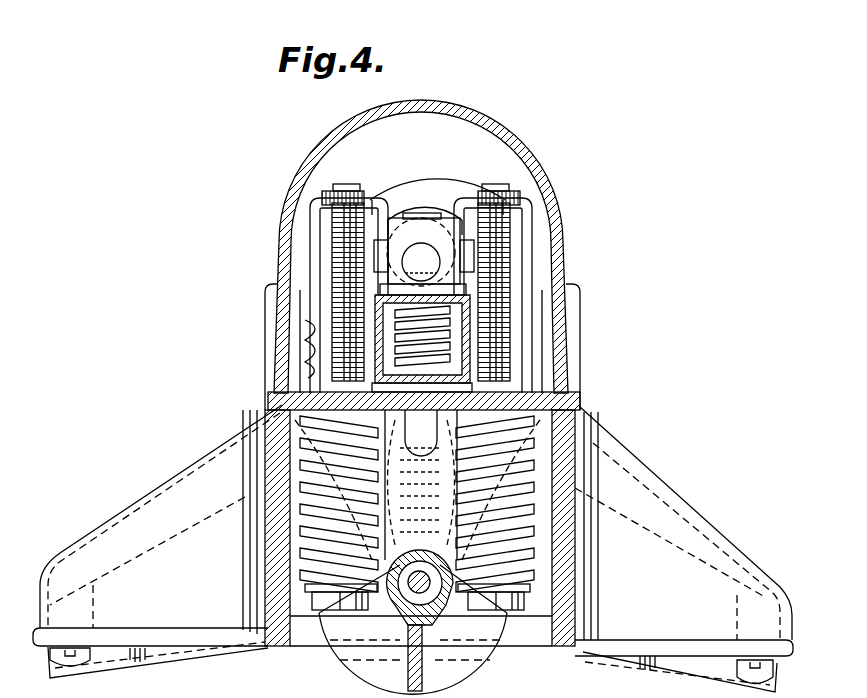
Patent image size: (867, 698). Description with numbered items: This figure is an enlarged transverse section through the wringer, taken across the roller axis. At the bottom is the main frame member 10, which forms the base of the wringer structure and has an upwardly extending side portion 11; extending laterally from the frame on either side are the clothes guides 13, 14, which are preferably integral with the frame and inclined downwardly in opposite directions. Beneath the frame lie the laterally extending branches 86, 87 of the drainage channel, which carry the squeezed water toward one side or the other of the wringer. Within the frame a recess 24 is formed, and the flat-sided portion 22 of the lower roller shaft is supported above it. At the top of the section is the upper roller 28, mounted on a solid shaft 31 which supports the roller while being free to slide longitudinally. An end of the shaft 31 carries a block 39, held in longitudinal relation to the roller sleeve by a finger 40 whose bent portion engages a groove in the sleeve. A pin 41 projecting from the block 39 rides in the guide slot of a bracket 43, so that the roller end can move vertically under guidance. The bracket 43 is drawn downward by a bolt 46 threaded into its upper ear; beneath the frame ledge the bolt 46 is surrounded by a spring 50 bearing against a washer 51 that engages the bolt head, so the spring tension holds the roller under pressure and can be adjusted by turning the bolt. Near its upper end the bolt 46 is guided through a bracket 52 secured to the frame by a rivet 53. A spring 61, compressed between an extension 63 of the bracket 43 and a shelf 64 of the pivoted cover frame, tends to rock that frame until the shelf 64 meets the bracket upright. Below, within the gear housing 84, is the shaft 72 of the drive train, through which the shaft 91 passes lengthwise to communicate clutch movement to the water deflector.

The main frame member 10 is at (128, 640).
The side portion 11 is at (300, 611).
The clothes guide 13 is at (659, 531).
The clothes guide 14 is at (189, 519).
The flat-sided portion 22 is at (580, 412).
The recess 24 is at (300, 450).
The upper roller 28 is at (430, 180).
The shaft 31 is at (424, 251).
The block 39 is at (408, 238).
The finger 40 is at (442, 215).
The pin 41 is at (474, 260).
The bracket 43 is at (397, 193).
The bolt 46 is at (333, 257).
The spring 50 is at (300, 534).
The washer 51 is at (310, 584).
The bracket 52 is at (310, 240).
The rivet 53 is at (316, 337).
The spring 61 is at (442, 353).
The extension 63 is at (385, 372).
The shelf 64 is at (400, 294).
The shaft 72 is at (372, 643).
The gear housing 84 is at (408, 668).
The branch 86 is at (634, 663).
The branch 87 is at (191, 655).
The shaft 91 is at (439, 603).